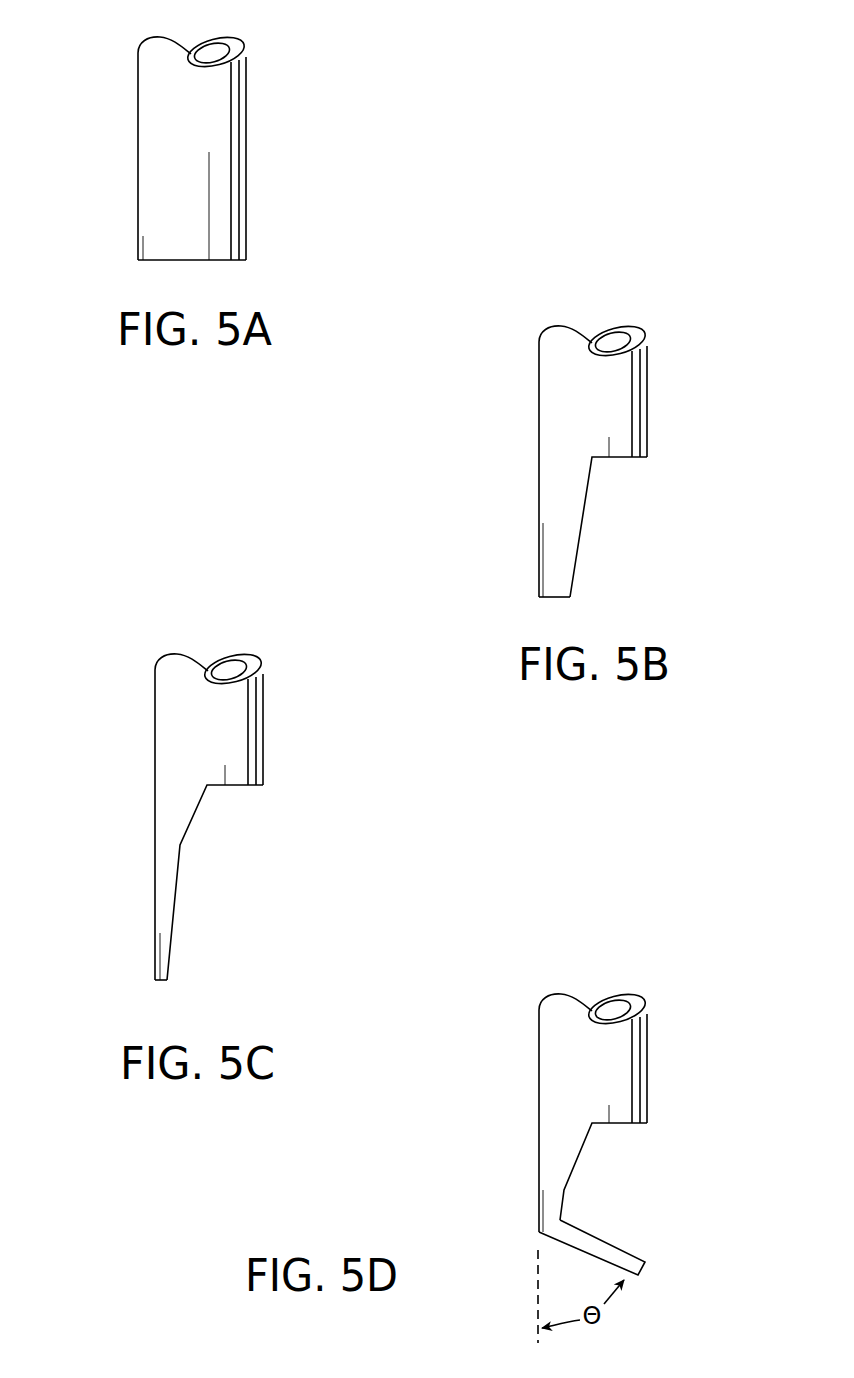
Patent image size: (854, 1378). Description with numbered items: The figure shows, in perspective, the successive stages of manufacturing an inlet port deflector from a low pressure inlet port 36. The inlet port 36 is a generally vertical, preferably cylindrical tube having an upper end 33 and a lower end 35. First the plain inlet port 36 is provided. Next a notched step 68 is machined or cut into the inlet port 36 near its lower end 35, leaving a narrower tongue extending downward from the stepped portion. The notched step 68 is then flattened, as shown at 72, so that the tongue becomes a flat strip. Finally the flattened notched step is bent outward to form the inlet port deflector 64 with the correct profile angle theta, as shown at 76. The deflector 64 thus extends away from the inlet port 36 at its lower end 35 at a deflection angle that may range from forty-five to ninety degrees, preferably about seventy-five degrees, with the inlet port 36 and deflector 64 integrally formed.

In FIG. 5A, the upper end 33 is at (157, 38).
In FIG. 5B, the upper end 33 is at (565, 327).
In FIG. 5C, the upper end 33 is at (180, 656).
In FIG. 5D, the upper end 33 is at (565, 995).
In FIG. 5A, the lower end 35 is at (138, 258).
In FIG. 5B, the lower end 35 is at (539, 597).
In FIG. 5C, the lower end 35 is at (155, 980).
In FIG. 5A, the low pressure inlet port 36 is at (228, 50).
In FIG. 5B, the low pressure inlet port 36 is at (629, 339).
In FIG. 5C, the low pressure inlet port 36 is at (245, 668).
In FIG. 5D, the low pressure inlet port 36 is at (629, 1007).
In FIG. 5D, the inlet port deflector 64 is at (617, 1257).
In FIG. 5B, the notched step 68 is at (612, 533).
In FIG. 5C, the flattened notched step 72 is at (235, 887).
In FIG. 5D, the bent deflector stage 76 is at (631, 1194).